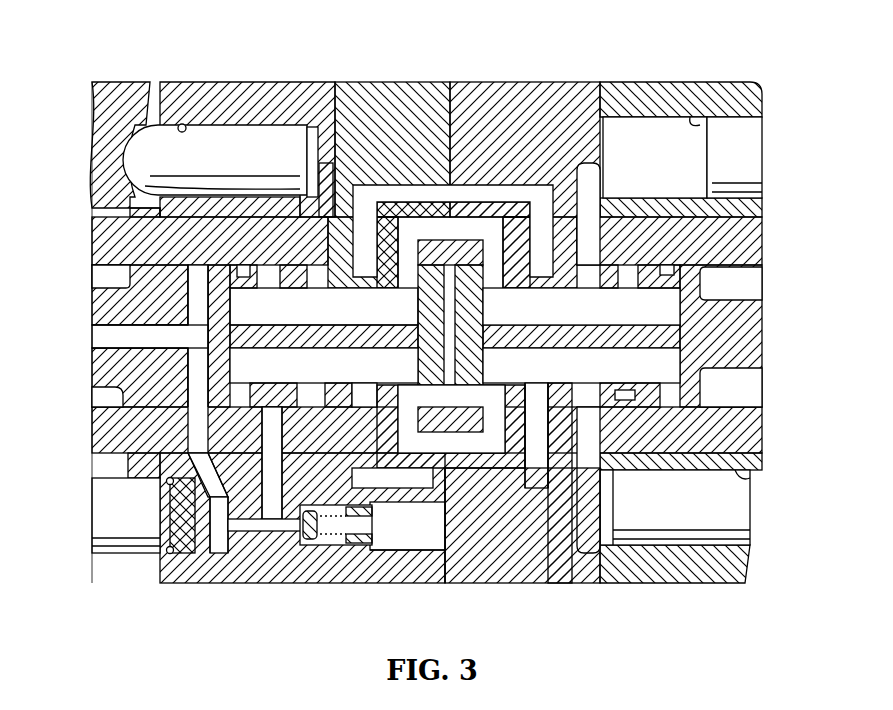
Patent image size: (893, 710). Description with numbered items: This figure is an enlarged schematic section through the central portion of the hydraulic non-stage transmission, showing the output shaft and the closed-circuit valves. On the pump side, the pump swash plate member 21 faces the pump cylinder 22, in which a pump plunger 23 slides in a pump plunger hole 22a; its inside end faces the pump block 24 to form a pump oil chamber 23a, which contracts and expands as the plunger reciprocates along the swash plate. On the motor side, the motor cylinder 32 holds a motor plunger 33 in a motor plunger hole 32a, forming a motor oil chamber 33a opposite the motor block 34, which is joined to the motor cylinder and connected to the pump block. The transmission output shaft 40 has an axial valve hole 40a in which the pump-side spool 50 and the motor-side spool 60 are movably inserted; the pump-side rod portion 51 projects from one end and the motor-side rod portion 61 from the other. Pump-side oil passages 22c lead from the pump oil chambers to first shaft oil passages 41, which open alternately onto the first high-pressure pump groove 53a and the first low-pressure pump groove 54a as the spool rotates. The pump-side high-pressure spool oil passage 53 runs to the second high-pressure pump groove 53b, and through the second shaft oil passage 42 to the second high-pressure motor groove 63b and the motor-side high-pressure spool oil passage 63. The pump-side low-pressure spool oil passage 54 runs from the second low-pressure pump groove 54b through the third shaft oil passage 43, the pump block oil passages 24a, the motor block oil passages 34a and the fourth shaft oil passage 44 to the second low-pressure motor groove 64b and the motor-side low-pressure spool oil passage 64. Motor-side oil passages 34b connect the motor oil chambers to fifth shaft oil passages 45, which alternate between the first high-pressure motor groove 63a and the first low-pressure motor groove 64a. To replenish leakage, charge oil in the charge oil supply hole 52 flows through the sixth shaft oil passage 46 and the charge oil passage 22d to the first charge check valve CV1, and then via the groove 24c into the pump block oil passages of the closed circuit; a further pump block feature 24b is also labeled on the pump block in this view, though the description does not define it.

The pump swash plate member 21 is at (102, 92).
The pump cylinder 22 is at (222, 84).
The pump plunger hole 22a is at (182, 124).
The pump-side oil passage 22c is at (330, 118).
The charge oil passage 22d is at (172, 548).
The pump plunger 23 is at (206, 163).
The pump oil chamber 23a is at (312, 125).
The pump block 24 is at (375, 84).
The pump block oil passage 24a is at (403, 477).
The bottom wall 24b is at (395, 550).
The groove 24c is at (485, 550).
The motor cylinder 32 is at (665, 82).
The motor plunger hole 32a is at (700, 120).
The motor plunger 33 is at (750, 146).
The motor oil chamber 33a is at (676, 171).
The motor block 34 is at (533, 96).
The motor block oil passage 34a is at (495, 477).
The motor-side oil passage 34b is at (588, 168).
The transmission output shaft 40 is at (764, 235).
The valve hole 40a is at (762, 278).
The first shaft oil passage 41 is at (275, 218).
The second shaft oil passage 42 is at (466, 238).
The third shaft oil passage 43 is at (377, 440).
The fourth shaft oil passage 44 is at (538, 470).
The fifth shaft oil passage 45 is at (587, 243).
The sixth shaft oil passage 46 is at (198, 432).
The pump-side spool 50 is at (90, 369).
The pump-side rod portion 51 is at (92, 386).
The charge oil supply hole 52 is at (95, 333).
The pump-side high-pressure spool oil passage 53 is at (304, 311).
The first high-pressure pump groove 53a is at (308, 268).
The second high-pressure pump groove 53b is at (410, 250).
The pump-side low-pressure spool oil passage 54 is at (306, 376).
The first low-pressure pump groove 54a is at (297, 390).
The second low-pressure pump groove 54b is at (372, 402).
The motor-side spool 60 is at (762, 320).
The motor-side rod portion 61 is at (748, 373).
The motor-side high-pressure spool oil passage 63 is at (561, 311).
The first high-pressure motor groove 63a is at (595, 282).
The second high-pressure motor groove 63b is at (510, 238).
The motor-side low-pressure spool oil passage 64 is at (564, 376).
The first low-pressure motor groove 64a is at (600, 394).
The second low-pressure motor groove 64b is at (538, 396).
The first charge check valve CV1 is at (233, 562).